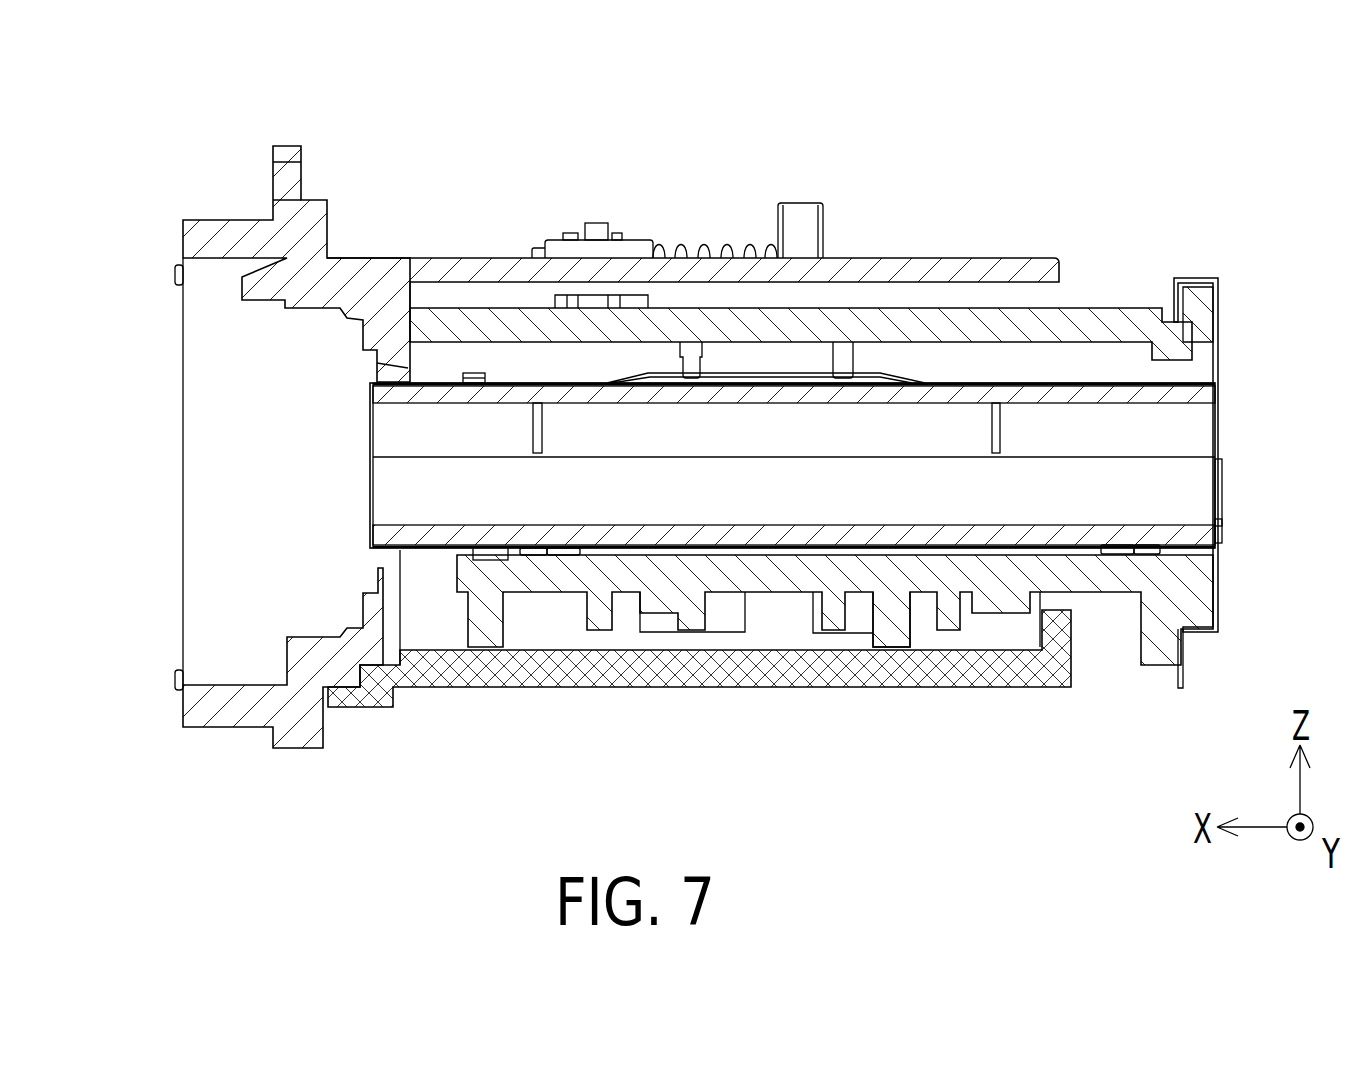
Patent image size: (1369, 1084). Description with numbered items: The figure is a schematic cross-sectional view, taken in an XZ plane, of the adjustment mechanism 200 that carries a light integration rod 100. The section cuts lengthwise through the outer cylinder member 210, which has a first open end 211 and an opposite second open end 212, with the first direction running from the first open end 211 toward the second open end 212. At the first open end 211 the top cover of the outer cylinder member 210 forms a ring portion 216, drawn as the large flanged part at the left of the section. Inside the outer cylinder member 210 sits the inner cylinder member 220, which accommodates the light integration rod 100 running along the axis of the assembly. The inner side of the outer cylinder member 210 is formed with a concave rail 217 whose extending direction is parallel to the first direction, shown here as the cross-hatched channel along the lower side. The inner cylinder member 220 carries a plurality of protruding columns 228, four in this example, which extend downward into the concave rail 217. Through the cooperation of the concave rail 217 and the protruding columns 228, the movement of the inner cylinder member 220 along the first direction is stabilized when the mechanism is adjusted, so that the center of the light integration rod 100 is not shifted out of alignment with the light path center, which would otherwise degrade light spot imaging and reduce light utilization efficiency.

The adjustment mechanism 200 is at (162, 150).
The ring portion 216 is at (239, 235).
The outer cylinder member 210 is at (488, 295).
The second open end 212 is at (1078, 268).
The inner cylinder member 220 is at (1127, 358).
The first open end 211 is at (208, 491).
The light integration rod 100 is at (1200, 490).
The protruding columns 228 is at (898, 649).
The concave rail 217 is at (986, 646).